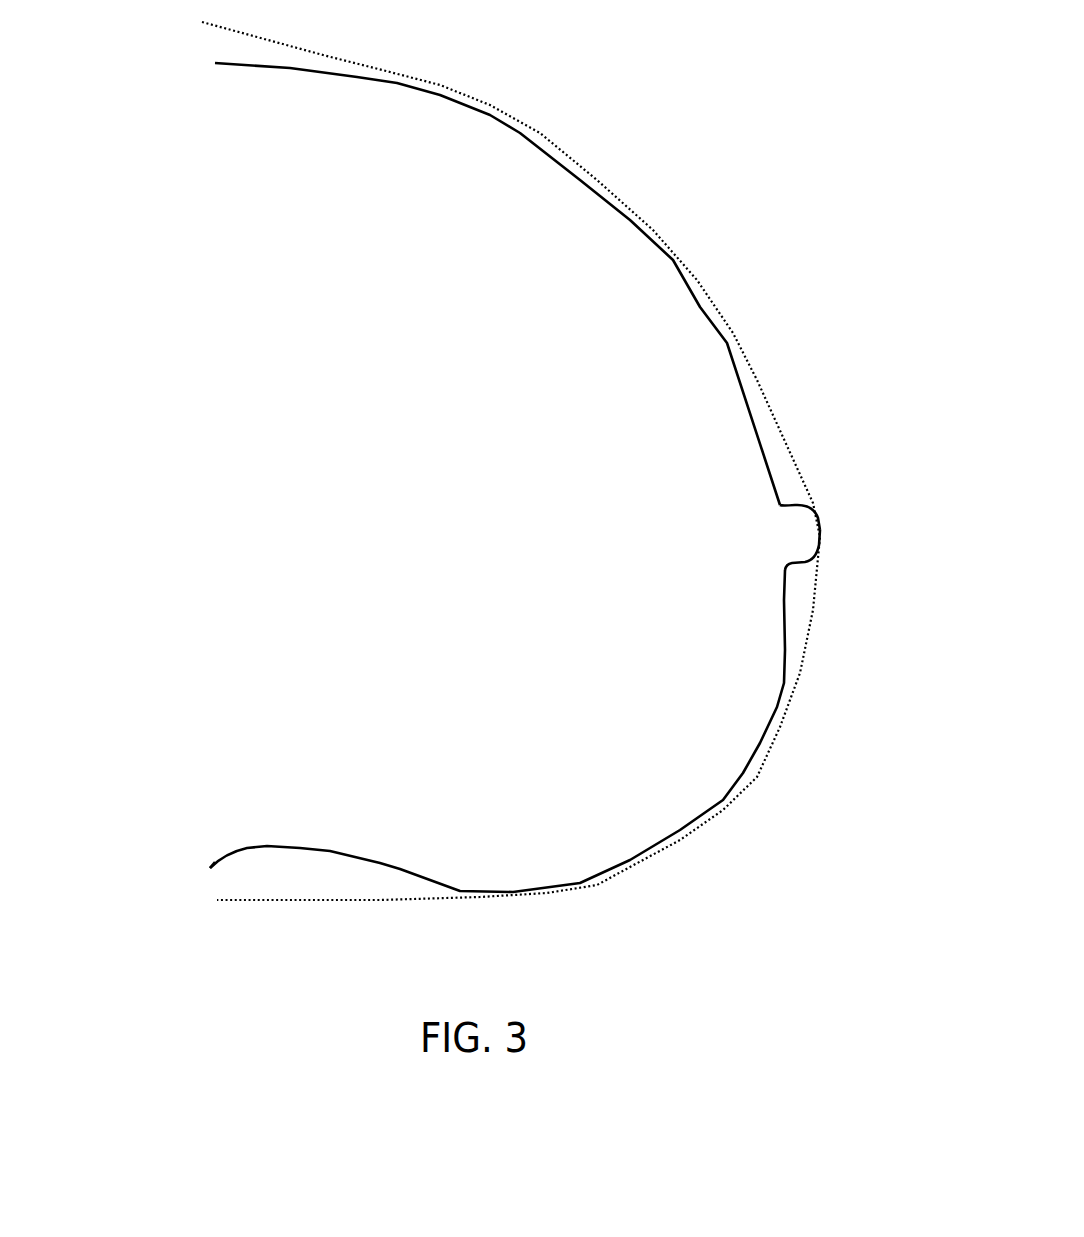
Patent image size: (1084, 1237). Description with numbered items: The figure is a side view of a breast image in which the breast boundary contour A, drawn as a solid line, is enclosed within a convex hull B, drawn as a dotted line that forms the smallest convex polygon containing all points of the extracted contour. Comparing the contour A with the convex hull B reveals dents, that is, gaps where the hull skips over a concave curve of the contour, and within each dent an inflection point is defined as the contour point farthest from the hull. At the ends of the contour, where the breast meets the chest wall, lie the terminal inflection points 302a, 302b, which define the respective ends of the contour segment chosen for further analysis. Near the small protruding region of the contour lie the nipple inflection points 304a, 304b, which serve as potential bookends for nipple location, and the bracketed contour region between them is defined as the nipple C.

The terminal inflection point 302a is at (250, 84).
The terminal inflection point 302b is at (254, 832).
The nipple inflection point 304a is at (767, 508).
The nipple inflection point 304b is at (767, 578).
The breast boundary contour A is at (196, 864).
The convex hull B is at (196, 901).
The nipple C is at (828, 498).